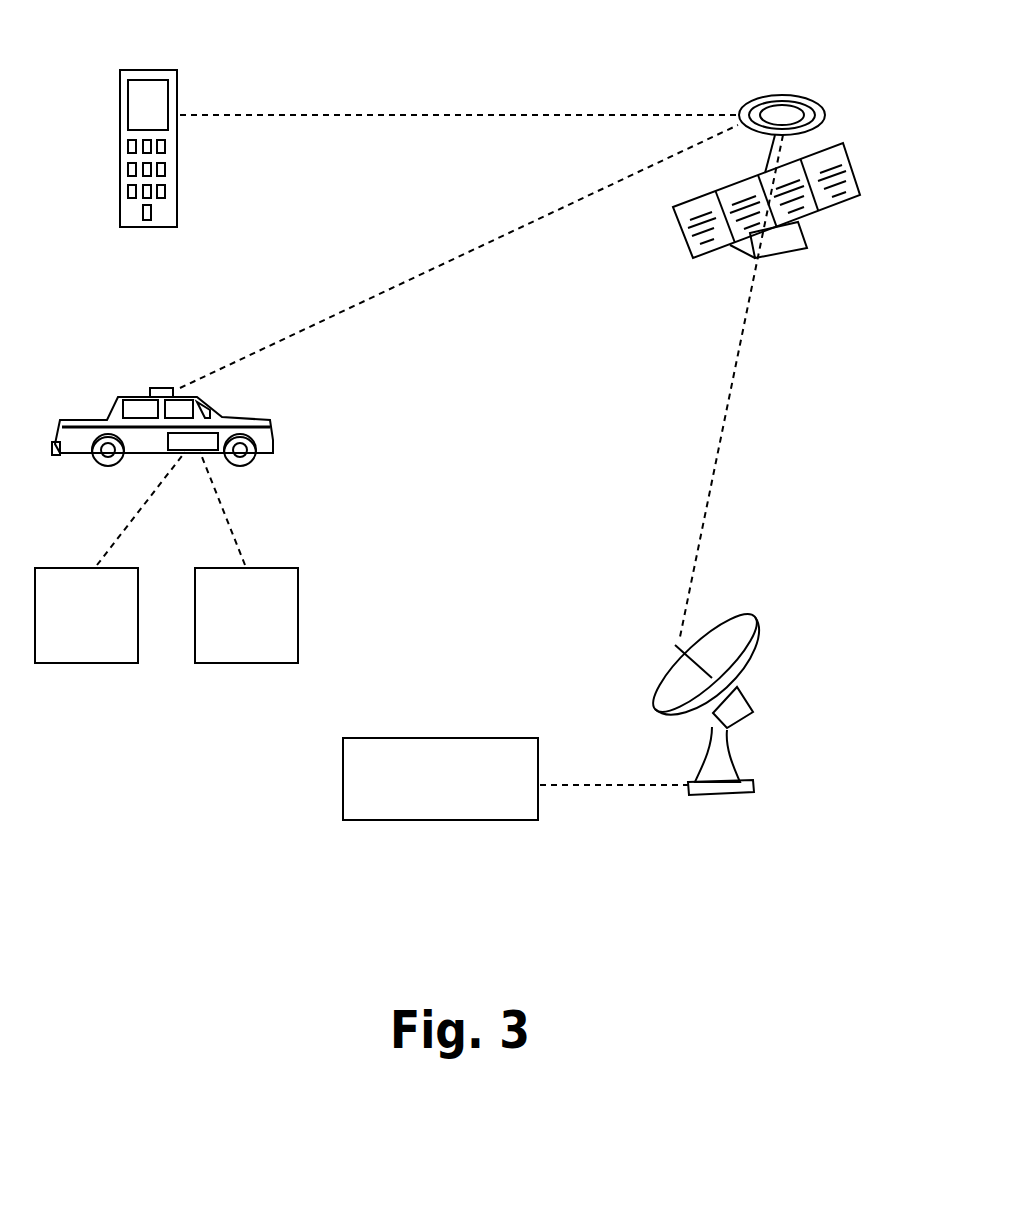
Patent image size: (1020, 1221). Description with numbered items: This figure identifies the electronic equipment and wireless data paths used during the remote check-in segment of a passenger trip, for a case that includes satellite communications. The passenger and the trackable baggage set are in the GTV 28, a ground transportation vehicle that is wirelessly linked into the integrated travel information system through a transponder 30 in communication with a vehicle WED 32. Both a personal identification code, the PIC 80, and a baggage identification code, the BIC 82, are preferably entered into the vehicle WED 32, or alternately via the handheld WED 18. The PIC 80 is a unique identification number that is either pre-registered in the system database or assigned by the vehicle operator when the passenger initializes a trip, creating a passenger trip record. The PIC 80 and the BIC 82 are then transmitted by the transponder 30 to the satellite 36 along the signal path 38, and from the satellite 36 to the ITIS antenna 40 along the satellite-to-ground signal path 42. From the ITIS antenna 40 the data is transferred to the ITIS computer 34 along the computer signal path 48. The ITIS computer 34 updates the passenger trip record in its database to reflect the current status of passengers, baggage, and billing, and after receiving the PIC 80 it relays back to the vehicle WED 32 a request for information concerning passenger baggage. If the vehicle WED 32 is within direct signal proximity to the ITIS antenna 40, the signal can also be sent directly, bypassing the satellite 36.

The WED 18 is at (122, 100).
The GTV 28 is at (162, 392).
The transponder 30 is at (152, 388).
The vehicle WED 32 is at (205, 440).
The ITIS computer 34 is at (428, 738).
The satellite 36 is at (842, 167).
The signal path 38 is at (396, 285).
The ITIS antenna 40 is at (738, 705).
The satellite-to-ground signal path 42 is at (708, 508).
The computer signal path 48 is at (618, 785).
The personal identification code (PIC) 80 is at (65, 568).
The baggage identification code (BIC) 82 is at (275, 568).